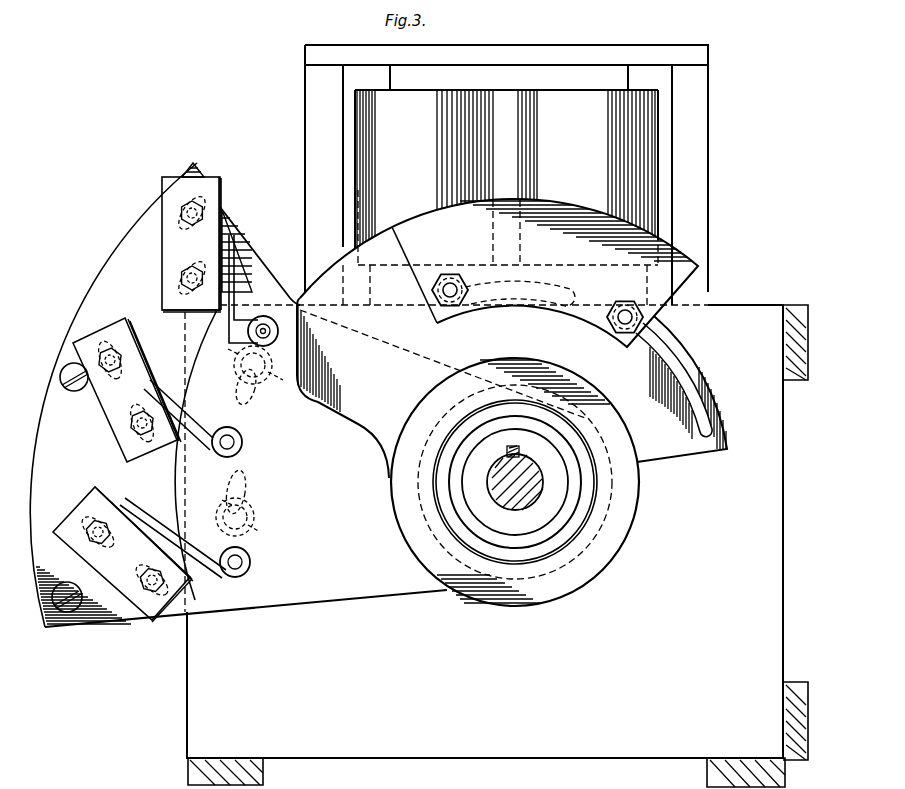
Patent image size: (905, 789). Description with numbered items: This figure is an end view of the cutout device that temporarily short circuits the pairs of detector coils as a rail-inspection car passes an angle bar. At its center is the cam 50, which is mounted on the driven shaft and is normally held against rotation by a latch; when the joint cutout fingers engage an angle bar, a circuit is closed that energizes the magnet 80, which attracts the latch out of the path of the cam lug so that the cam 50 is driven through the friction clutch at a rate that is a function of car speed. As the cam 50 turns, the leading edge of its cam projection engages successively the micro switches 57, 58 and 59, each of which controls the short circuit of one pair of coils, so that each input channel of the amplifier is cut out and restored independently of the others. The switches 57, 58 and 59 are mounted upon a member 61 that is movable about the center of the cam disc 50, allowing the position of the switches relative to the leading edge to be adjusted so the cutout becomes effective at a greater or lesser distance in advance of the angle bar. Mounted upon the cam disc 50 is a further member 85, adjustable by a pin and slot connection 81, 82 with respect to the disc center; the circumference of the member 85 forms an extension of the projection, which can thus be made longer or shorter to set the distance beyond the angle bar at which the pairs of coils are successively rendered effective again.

The cam 50 is at (610, 568).
The micro switch 57 is at (137, 597).
The micro switch 58 is at (120, 430).
The micro switch 59 is at (165, 188).
The member 61 is at (337, 588).
The magnet 80 is at (507, 168).
The pin 81 is at (436, 316).
The slot 82 is at (503, 290).
The member 85 is at (567, 203).